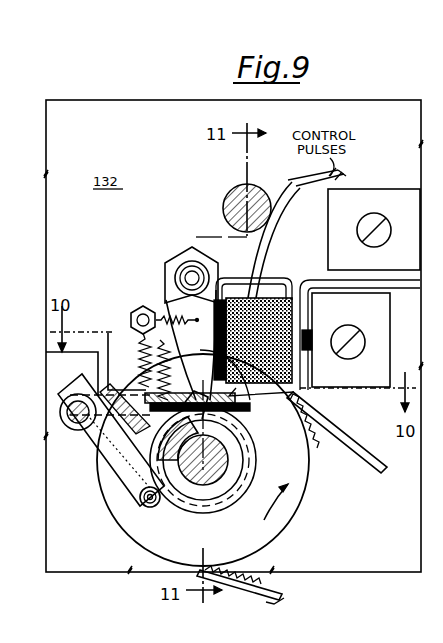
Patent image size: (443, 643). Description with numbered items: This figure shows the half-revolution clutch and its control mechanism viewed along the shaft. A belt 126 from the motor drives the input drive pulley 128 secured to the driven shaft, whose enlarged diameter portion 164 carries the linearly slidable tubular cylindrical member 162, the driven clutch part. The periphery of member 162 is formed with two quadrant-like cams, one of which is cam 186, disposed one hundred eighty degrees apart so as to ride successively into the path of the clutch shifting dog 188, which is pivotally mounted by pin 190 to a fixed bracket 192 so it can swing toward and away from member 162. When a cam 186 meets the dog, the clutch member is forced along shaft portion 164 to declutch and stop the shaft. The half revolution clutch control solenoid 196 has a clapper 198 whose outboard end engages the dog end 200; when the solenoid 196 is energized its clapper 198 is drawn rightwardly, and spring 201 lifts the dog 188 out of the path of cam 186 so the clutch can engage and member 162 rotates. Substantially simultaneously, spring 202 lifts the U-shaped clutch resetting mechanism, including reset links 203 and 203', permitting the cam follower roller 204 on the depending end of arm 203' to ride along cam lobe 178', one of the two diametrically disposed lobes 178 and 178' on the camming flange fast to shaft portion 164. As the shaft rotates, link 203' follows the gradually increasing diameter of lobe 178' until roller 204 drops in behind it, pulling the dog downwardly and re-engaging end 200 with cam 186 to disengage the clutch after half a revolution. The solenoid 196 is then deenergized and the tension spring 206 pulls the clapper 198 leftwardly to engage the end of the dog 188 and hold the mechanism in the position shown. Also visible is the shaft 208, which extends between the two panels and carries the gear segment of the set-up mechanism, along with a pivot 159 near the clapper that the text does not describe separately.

The shaft 208 is at (266, 194).
The half revolution clutch control solenoid 196 is at (284, 298).
The quadrant-like cam 186 is at (216, 388).
The pivot pin 159 is at (122, 272).
The solenoid clapper 198 is at (226, 308).
The dog end 200 is at (206, 336).
The tension spring 206 is at (164, 306).
The spring 202 is at (148, 346).
The fixed bracket 192 is at (78, 352).
The spring 201 is at (152, 377).
The clutch shifting dog 188 is at (108, 395).
The pin 190 is at (76, 430).
The reset link 203 is at (111, 440).
The reset link 203' is at (103, 444).
The cam lobe 178 is at (191, 487).
The cam lobe 178' is at (218, 452).
The enlarged diameter portion of shaft 164 is at (238, 450).
The tubular cylindrical member 162 is at (262, 460).
The cam follower roller 204 is at (300, 498).
The input drive pulley 128 is at (278, 526).
The belt 126 is at (338, 427).